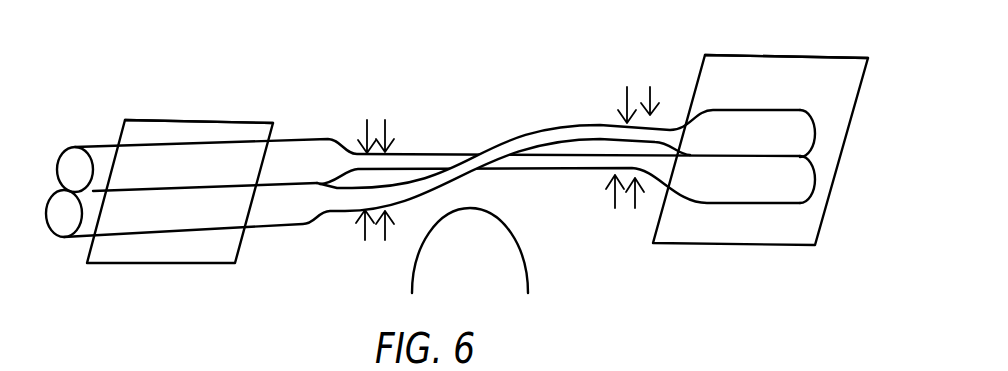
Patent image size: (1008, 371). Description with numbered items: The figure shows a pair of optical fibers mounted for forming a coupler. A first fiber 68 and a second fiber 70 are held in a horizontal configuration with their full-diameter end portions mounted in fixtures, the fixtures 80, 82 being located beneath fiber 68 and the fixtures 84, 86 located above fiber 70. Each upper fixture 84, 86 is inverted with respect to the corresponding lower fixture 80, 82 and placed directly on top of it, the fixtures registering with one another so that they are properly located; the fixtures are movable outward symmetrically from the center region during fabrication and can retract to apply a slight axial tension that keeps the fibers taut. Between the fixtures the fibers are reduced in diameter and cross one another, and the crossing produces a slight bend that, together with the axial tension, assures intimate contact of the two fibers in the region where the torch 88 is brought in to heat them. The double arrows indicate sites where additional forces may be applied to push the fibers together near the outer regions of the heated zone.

The fiber 68 is at (292, 212).
The fiber 70 is at (312, 152).
The fixture 80 is at (155, 253).
The fixture 82 is at (728, 230).
The fixture 84 is at (210, 135).
The fixture 86 is at (770, 73).
The torch 88 is at (447, 272).